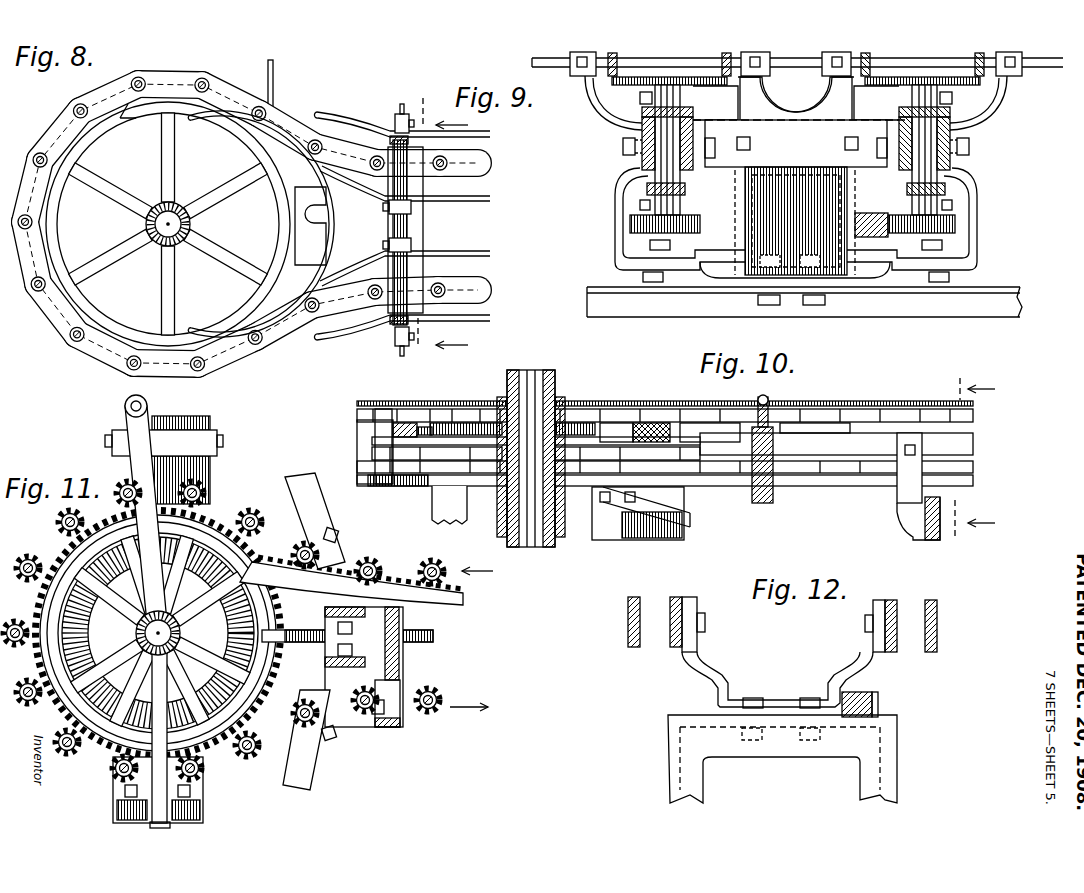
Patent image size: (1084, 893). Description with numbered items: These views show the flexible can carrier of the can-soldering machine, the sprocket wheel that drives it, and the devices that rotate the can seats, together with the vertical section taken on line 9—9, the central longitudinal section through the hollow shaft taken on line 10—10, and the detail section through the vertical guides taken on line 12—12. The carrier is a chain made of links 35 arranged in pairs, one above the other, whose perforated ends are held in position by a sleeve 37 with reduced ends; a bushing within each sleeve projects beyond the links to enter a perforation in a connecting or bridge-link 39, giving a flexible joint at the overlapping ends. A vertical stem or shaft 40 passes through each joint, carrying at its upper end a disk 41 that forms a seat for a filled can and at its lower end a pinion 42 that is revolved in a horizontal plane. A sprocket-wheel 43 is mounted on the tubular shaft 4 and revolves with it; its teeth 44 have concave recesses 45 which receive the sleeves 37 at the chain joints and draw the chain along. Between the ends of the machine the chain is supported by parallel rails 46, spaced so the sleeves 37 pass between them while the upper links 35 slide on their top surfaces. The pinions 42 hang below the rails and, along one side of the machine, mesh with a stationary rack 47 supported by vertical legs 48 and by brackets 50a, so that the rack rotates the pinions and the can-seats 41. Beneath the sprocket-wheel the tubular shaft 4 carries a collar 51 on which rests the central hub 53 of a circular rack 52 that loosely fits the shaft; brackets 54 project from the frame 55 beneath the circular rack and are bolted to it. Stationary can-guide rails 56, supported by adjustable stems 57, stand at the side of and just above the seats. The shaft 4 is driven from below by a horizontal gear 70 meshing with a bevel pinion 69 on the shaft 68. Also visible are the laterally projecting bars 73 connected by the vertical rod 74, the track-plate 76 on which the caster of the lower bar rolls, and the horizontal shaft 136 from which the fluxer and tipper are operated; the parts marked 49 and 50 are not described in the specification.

In FIG. 8, the tubular shaft 4 is at (176, 249).
In FIG. 10, the tubular shaft 4 is at (528, 383).
In FIG. 11, the tubular shaft 4 is at (158, 633).
In FIG. 8, the section line 9— 9 is at (440, 228).
In FIG. 8, the section line 10— 10 is at (460, 225).
In FIG. 10, the section line 12— 12 is at (873, 457).
In FIG. 9, the links 35 is at (640, 115).
In FIG. 9, the sleeve 37 is at (660, 160).
In FIG. 8, the bridge-link 39 is at (172, 78).
In FIG. 9, the bridge-link 39 is at (692, 112).
In FIG. 8, the vertical stem or shaft 40 is at (35, 222).
In FIG. 11, the vertical stem or shaft 40 is at (200, 772).
In FIG. 9, the disk 41 is at (656, 81).
In FIG. 10, the disk 41 is at (380, 394).
In FIG. 9, the pinion 42 is at (681, 221).
In FIG. 10, the pinion 42 is at (385, 480).
In FIG. 11, the pinion 42 is at (57, 524).
In FIG. 8, the sprocket-wheel 43 is at (102, 128).
In FIG. 10, the sprocket-wheel 43 is at (579, 434).
In FIG. 8, the teeth 44 is at (322, 242).
In FIG. 10, the teeth 44 is at (357, 441).
In FIG. 8, the concave recesses 45 is at (315, 232).
In FIG. 8, the parallel rails 46 is at (259, 103).
In FIG. 9, the parallel rails 46 is at (640, 135).
In FIG. 10, the parallel rails 46 is at (665, 453).
In FIG. 12, the parallel rails 46 is at (633, 622).
In FIG. 9, the stationary rack 47 is at (866, 220).
In FIG. 10, the stationary rack 47 is at (845, 489).
In FIG. 11, the stationary rack 47 is at (450, 598).
In FIG. 12, the stationary rack 47 is at (878, 703).
In FIG. 10, the vertical legs 48 is at (925, 526).
In FIG. 12, the vertical legs 48 is at (683, 787).
In FIG. 12, the yoke 49 is at (714, 676).
In FIG. 9, the casing 50 is at (965, 215).
In FIG. 8, the brackets 50a is at (413, 254).
In FIG. 9, the brackets 50a is at (795, 221).
In FIG. 11, the brackets 50a is at (402, 722).
In FIG. 10, the collar 51 is at (547, 537).
In FIG. 10, the circular rack 52 is at (461, 476).
In FIG. 11, the circular rack 52 is at (209, 527).
In FIG. 10, the central hub 53 is at (504, 506).
In FIG. 10, the brackets 54 is at (660, 512).
In FIG. 11, the brackets 54 is at (318, 545).
In FIG. 10, the frame 55 is at (638, 513).
In FIG. 11, the frame 55 is at (338, 566).
In FIG. 8, the can-guide rails 56 is at (321, 113).
In FIG. 9, the can-guide rails 56 is at (616, 65).
In FIG. 10, the can-guide rails 56 is at (650, 404).
In FIG. 8, the stems 57 is at (397, 116).
In FIG. 9, the stems 57 is at (773, 66).
In FIG. 11, the shaft 68 is at (165, 818).
In FIG. 11, the bevel pinion 69 is at (108, 722).
In FIG. 11, the horizontal gear 70 is at (62, 659).
In FIG. 11, the bars 73 is at (140, 441).
In FIG. 11, the vertical rod 74 is at (148, 404).
In FIG. 11, the track-plate 76 is at (164, 460).
In FIG. 11, the horizontal shaft 136 is at (433, 638).